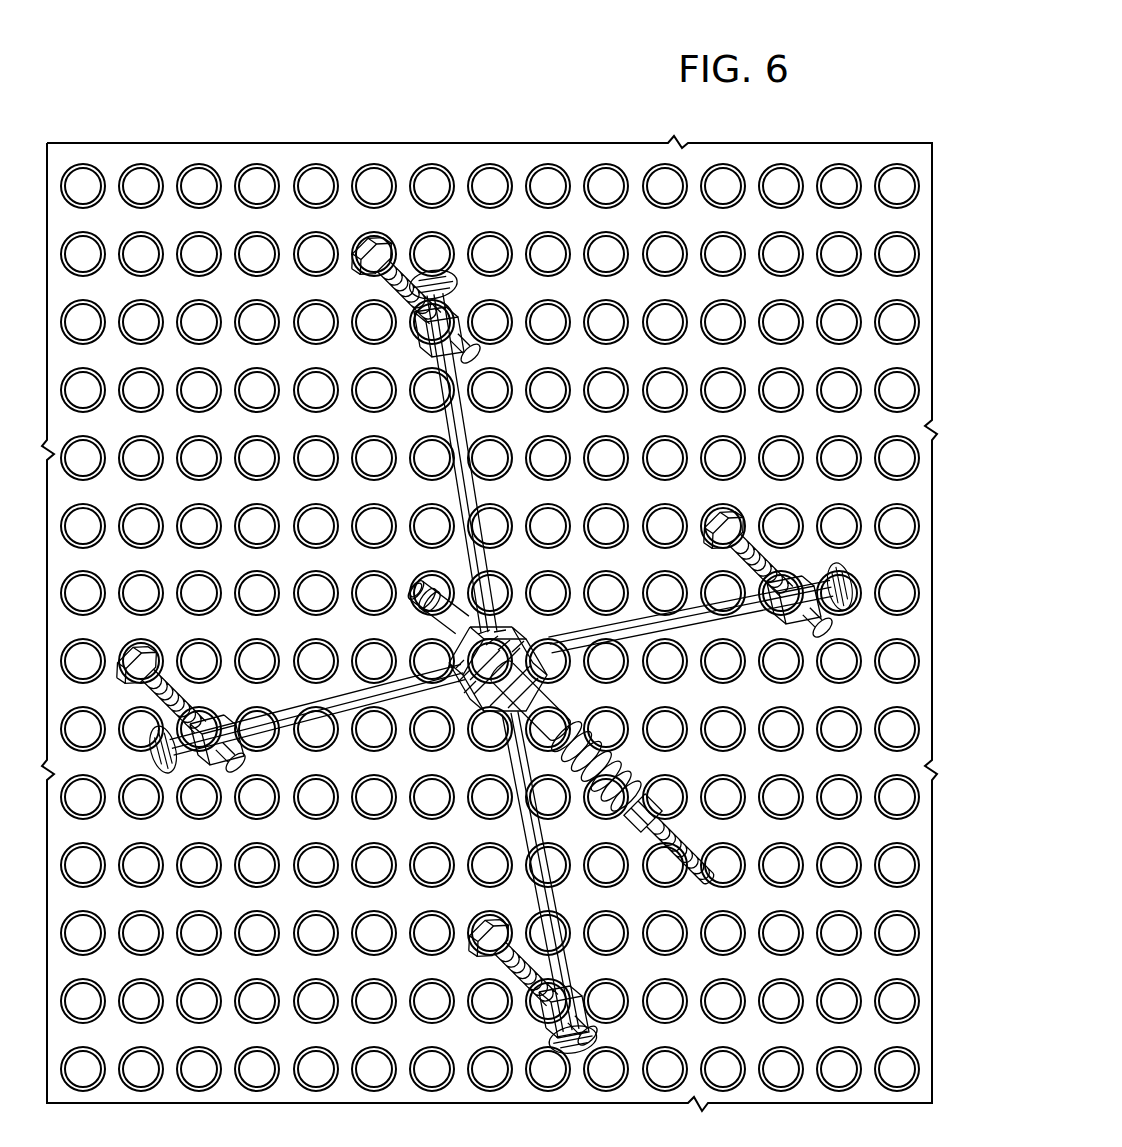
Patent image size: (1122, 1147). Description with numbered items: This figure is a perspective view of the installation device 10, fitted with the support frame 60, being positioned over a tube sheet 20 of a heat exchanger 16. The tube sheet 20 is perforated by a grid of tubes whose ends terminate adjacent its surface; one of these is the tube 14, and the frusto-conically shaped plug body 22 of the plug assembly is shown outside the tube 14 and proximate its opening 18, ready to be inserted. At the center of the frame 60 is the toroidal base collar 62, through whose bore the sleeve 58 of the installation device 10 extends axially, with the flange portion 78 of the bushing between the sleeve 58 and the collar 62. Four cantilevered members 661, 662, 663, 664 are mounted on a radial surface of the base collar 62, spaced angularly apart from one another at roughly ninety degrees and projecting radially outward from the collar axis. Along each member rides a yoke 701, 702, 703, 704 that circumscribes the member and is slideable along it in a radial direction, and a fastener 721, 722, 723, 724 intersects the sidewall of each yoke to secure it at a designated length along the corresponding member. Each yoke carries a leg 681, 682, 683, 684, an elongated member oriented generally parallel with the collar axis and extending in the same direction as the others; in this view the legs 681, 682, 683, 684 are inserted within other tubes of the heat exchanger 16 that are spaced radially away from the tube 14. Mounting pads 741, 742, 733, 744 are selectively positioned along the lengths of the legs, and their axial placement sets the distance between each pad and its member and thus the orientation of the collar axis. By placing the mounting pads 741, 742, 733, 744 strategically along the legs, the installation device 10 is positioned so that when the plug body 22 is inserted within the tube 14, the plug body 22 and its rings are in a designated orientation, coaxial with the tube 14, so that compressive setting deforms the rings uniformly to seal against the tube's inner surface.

The installation device 10 is at (692, 776).
The tube 14 is at (413, 590).
The heat exchanger 16 is at (169, 128).
The opening 18 is at (404, 609).
The tube sheet 20 is at (290, 163).
The plug body 22 is at (428, 580).
The sleeve 58 is at (548, 700).
The support frame 60 is at (403, 752).
The base collar 62 is at (545, 595).
The flange portion 78 is at (548, 630).
The cantilevered member 661 is at (462, 428).
The cantilevered member 662 is at (722, 628).
The cantilevered member 663 is at (555, 925).
The cantilevered member 664 is at (320, 712).
The leg 681 is at (397, 296).
The leg 682 is at (772, 531).
The leg 683 is at (490, 968).
The leg 684 is at (175, 690).
The yoke 701 is at (455, 318).
The yoke 702 is at (800, 583).
The yoke 703 is at (588, 1000).
The yoke 704 is at (228, 715).
The fastener 721 is at (480, 354).
The fastener 722 is at (822, 622).
The fastener 723 is at (605, 1038).
The fastener 724 is at (240, 778).
The mounting pad 741 is at (340, 266).
The mounting pad 742 is at (702, 521).
The bolt head 733 is at (481, 925).
The mounting pad 744 is at (120, 668).